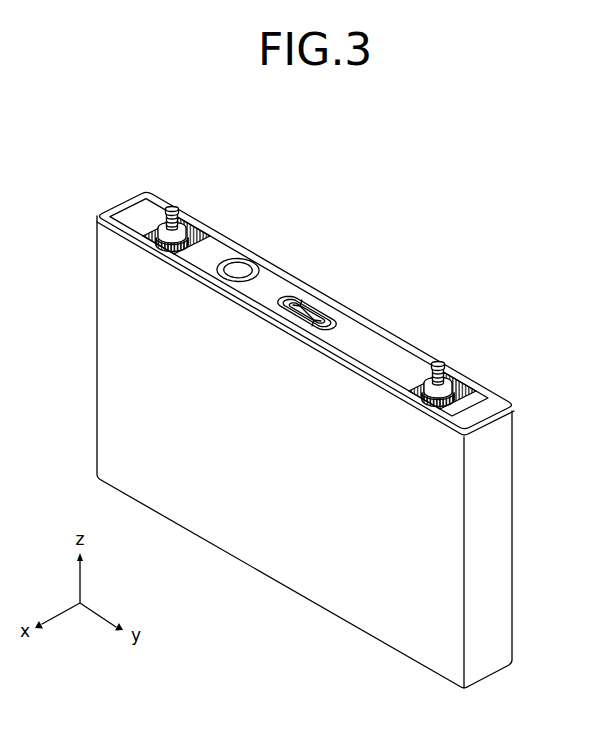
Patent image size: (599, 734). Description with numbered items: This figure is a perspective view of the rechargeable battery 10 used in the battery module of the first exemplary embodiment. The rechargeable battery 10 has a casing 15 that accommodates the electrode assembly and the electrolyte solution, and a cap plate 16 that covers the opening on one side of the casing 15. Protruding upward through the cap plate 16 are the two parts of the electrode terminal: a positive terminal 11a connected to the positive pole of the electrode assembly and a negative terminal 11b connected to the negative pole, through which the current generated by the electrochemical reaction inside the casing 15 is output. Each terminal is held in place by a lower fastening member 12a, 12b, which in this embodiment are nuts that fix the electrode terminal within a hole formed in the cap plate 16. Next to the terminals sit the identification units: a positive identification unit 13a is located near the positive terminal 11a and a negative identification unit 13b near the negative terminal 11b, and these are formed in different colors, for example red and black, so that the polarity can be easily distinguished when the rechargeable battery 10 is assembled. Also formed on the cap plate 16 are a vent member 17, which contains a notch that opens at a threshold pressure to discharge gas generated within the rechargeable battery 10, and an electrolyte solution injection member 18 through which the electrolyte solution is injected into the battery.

The rechargeable battery 10 is at (398, 293).
The positive terminal 11a is at (174, 209).
The negative terminal 11b is at (442, 366).
The lower fastening member 12a is at (188, 224).
The lower fastening member 12b is at (455, 382).
The positive identification unit 13a is at (205, 230).
The negative identification unit 13b is at (472, 386).
The casing 15 is at (353, 600).
The cap plate 16 is at (276, 287).
The vent member 17 is at (316, 320).
The electrolyte solution injection member 18 is at (242, 268).